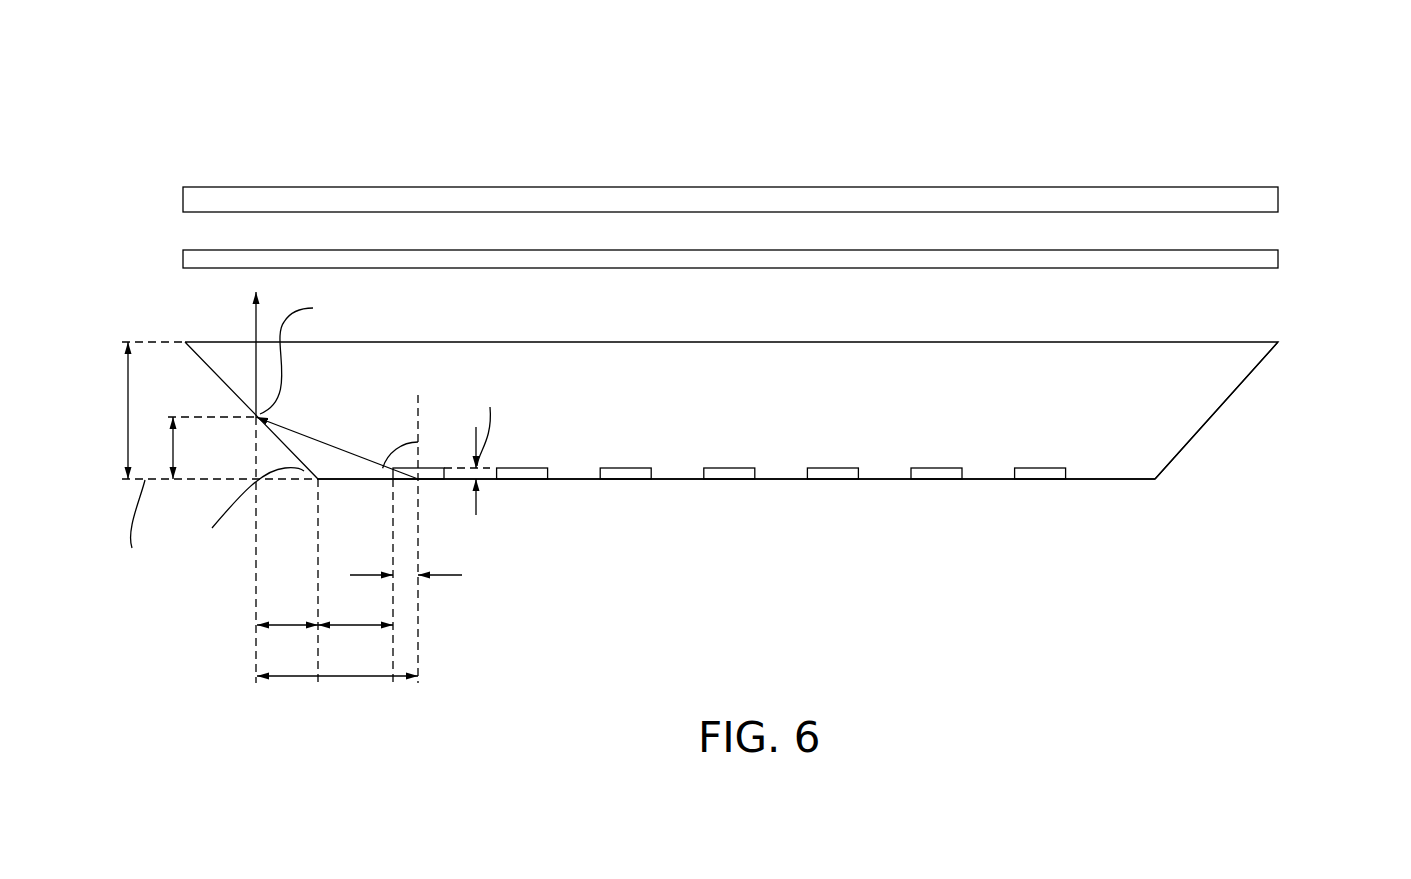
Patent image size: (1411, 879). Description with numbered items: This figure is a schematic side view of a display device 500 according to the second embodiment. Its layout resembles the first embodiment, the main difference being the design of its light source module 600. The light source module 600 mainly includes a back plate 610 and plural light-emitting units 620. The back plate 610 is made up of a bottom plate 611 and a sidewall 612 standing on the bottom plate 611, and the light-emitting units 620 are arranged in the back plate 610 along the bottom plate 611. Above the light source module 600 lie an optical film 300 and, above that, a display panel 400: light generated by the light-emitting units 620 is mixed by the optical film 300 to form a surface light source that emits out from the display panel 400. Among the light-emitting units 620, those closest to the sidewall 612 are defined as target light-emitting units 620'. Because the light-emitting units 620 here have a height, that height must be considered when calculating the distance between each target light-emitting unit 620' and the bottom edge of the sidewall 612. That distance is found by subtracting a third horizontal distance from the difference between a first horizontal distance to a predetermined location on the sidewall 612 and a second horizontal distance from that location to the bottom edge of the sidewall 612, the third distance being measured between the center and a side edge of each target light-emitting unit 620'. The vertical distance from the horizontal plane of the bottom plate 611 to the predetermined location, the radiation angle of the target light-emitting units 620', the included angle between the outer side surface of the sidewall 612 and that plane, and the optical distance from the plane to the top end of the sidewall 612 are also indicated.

The display device 500 is at (157, 121).
The display panel 400 is at (1270, 200).
The optical film 300 is at (1270, 260).
The light source module 600 is at (794, 485).
The back plate 610 is at (798, 485).
The bottom plate 611 is at (1110, 480).
The sidewall 612 is at (1212, 423).
The light-emitting units 620 is at (781, 516).
The target light-emitting units 620' is at (490, 508).